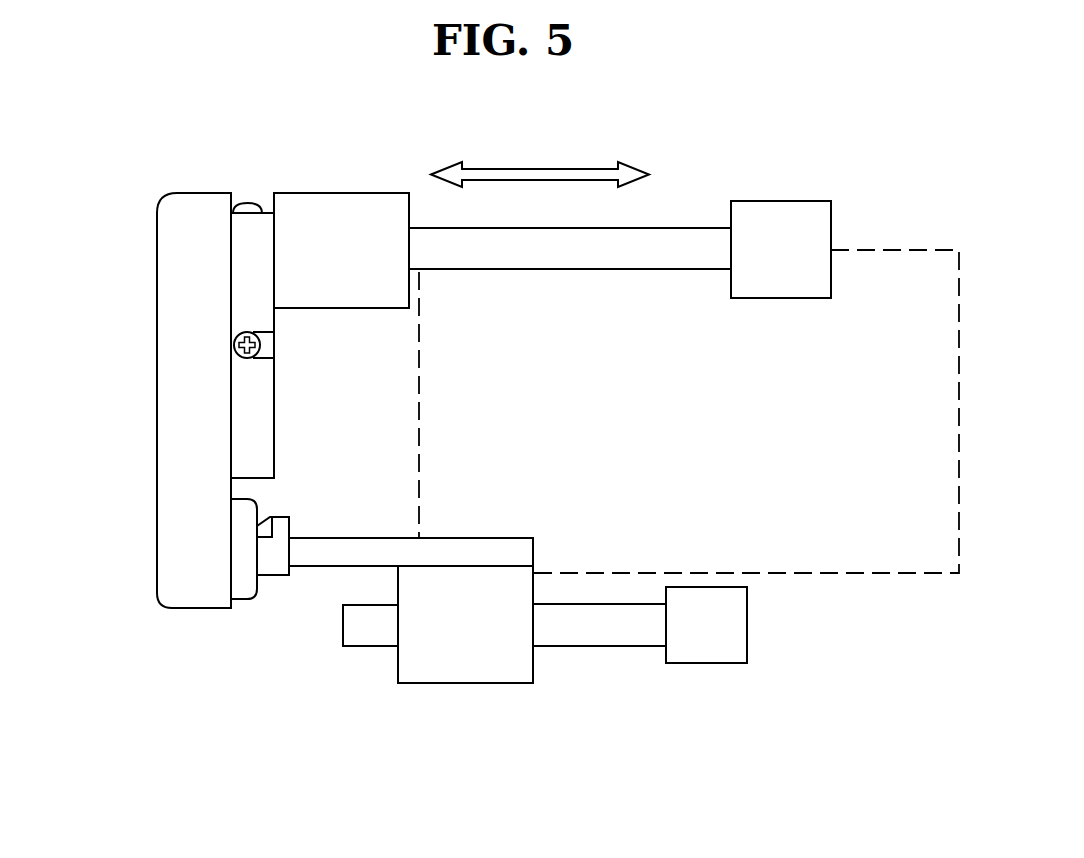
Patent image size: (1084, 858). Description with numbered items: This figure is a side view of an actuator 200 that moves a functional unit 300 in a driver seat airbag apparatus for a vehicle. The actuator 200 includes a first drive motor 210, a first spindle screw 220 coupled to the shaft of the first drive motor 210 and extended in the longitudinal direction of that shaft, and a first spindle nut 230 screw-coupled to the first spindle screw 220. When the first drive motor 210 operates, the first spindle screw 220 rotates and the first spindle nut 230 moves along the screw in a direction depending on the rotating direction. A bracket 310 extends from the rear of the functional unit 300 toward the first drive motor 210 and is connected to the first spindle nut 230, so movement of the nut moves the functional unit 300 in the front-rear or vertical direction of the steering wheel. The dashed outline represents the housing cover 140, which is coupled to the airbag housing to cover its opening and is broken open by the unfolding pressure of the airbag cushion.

The housing cover 140 is at (895, 575).
The actuator 200 is at (552, 467).
The first drive motor 210 is at (774, 208).
The first spindle screw 220 is at (602, 262).
The first spindle nut 230 is at (335, 210).
The functional unit 300 is at (173, 413).
The bracket 310 is at (485, 550).